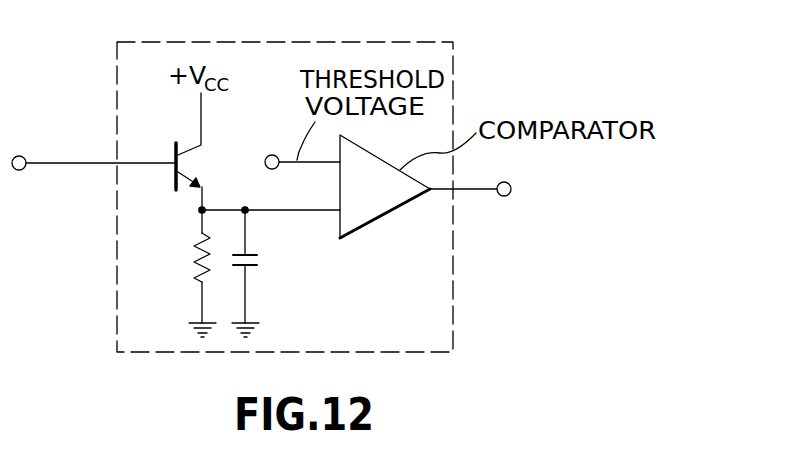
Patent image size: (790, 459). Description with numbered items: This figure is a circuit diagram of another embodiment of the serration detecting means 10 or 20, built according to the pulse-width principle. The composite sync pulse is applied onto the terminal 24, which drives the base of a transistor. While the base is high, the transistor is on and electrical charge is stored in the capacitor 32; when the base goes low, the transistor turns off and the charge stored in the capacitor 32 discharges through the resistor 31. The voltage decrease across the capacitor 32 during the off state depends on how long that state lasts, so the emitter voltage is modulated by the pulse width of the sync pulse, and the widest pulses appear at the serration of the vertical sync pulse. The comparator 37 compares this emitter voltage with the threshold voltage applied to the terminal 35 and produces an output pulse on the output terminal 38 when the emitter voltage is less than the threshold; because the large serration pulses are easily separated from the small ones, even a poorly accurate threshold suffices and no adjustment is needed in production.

The serration detecting means 10 is at (358, 179).
The serration detecting means 20 is at (285, 197).
The terminal 24 is at (20, 156).
The resistor 31 is at (178, 273).
The capacitor 32 is at (253, 255).
The terminal 35 is at (269, 156).
The comparator 37 is at (370, 198).
The output terminal 38 is at (509, 195).